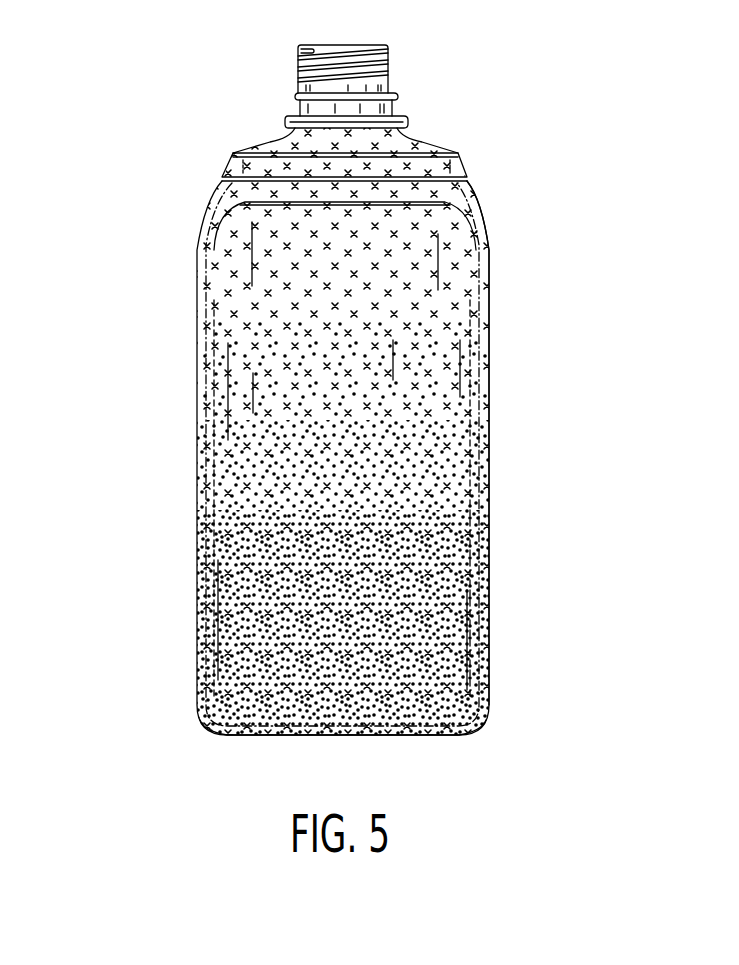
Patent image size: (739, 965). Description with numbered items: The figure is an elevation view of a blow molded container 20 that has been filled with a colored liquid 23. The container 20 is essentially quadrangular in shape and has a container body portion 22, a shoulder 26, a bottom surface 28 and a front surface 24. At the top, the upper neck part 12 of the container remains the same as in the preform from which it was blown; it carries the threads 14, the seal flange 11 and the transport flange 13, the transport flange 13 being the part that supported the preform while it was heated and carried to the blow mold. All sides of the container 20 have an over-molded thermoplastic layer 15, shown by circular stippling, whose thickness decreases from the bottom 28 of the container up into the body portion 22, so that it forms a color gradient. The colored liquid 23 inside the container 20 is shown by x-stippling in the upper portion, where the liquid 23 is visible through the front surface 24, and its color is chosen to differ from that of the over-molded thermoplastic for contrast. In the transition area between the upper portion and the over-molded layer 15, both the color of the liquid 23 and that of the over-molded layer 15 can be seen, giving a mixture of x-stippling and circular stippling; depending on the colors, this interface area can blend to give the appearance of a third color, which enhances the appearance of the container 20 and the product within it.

The seal flange 11 is at (296, 97).
The neck 12 is at (394, 104).
The transport flange 13 is at (286, 124).
The threads 14 is at (391, 62).
The over-molded thermoplastic layer 15 is at (460, 483).
The container 20 is at (496, 183).
The container body portion 22 is at (490, 252).
The colored liquid 23 is at (443, 292).
The front surface 24 is at (359, 261).
The shoulder 26 is at (232, 165).
The bottom surface 28 is at (445, 736).